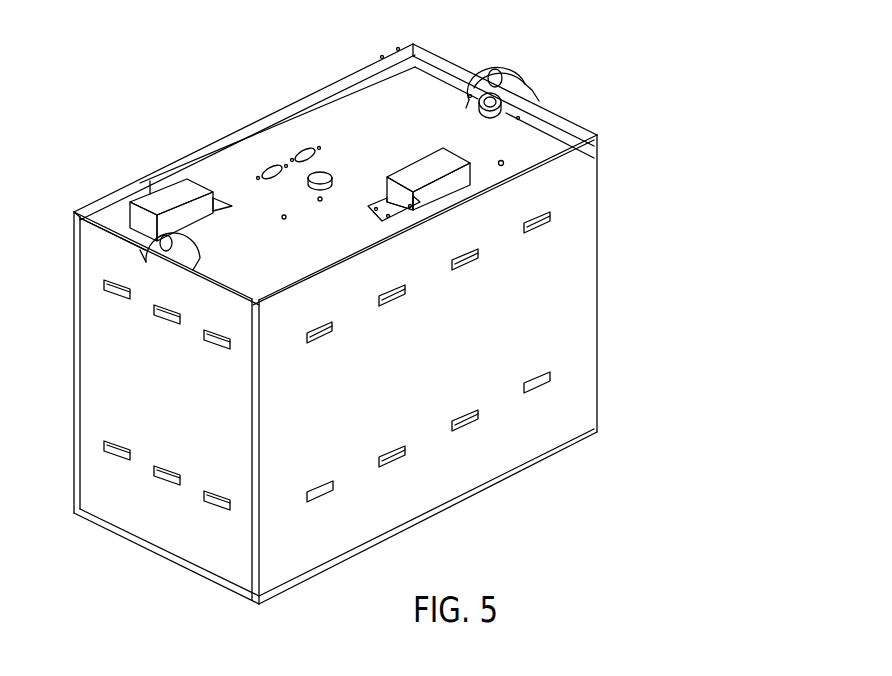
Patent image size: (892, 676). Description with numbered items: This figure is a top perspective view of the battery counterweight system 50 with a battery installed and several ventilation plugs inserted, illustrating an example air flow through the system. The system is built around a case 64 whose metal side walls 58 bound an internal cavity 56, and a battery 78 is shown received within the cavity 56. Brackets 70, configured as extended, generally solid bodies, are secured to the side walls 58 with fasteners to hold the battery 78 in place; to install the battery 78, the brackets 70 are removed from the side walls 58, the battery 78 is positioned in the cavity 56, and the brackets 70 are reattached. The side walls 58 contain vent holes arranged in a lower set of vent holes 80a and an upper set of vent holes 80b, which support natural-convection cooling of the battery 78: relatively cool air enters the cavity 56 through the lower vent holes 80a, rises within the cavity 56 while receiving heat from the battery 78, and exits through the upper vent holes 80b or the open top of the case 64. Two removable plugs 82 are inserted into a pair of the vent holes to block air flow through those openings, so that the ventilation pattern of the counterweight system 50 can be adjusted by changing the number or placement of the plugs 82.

The counterweight system 50 is at (146, 46).
The cavity 56 is at (119, 210).
The side walls 58 is at (430, 68).
The case 64 is at (120, 180).
The brackets 70 is at (268, 128).
The battery 78 is at (515, 140).
The lower set of vent holes 80a is at (217, 498).
The upper set of vent holes 80b is at (115, 291).
The removable plugs 82 is at (541, 390).